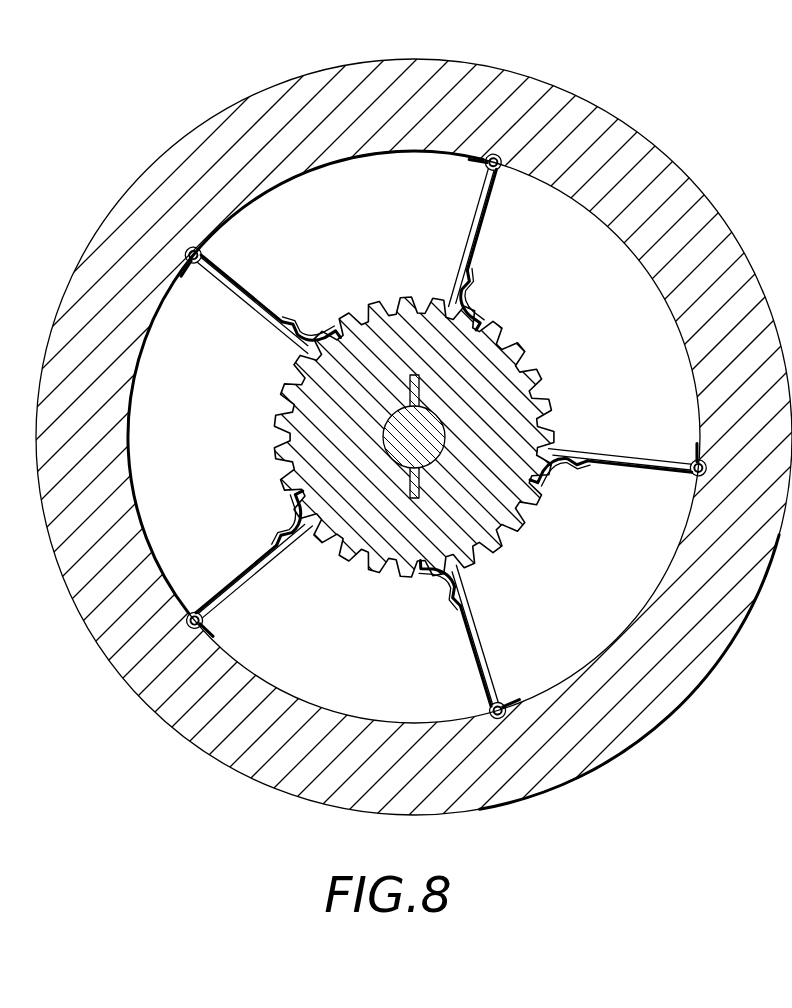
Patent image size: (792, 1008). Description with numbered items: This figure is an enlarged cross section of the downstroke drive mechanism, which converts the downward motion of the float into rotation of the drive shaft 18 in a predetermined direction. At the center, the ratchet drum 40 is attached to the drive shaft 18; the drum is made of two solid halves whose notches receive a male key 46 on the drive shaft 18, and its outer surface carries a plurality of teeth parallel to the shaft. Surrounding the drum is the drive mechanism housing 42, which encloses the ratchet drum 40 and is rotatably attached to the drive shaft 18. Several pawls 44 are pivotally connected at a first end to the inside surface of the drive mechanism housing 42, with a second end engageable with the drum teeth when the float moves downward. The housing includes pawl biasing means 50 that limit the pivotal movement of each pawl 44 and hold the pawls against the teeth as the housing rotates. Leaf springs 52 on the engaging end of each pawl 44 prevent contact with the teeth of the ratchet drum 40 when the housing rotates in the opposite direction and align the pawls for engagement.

The drive mechanism housing 42 is at (580, 76).
The ratchet drum 40 is at (522, 343).
The drive shaft 18 is at (383, 430).
The male key 46 is at (415, 377).
The pawl biasing means 50 is at (188, 268).
The pawl 44 is at (283, 317).
The leaf spring 52 is at (285, 318).